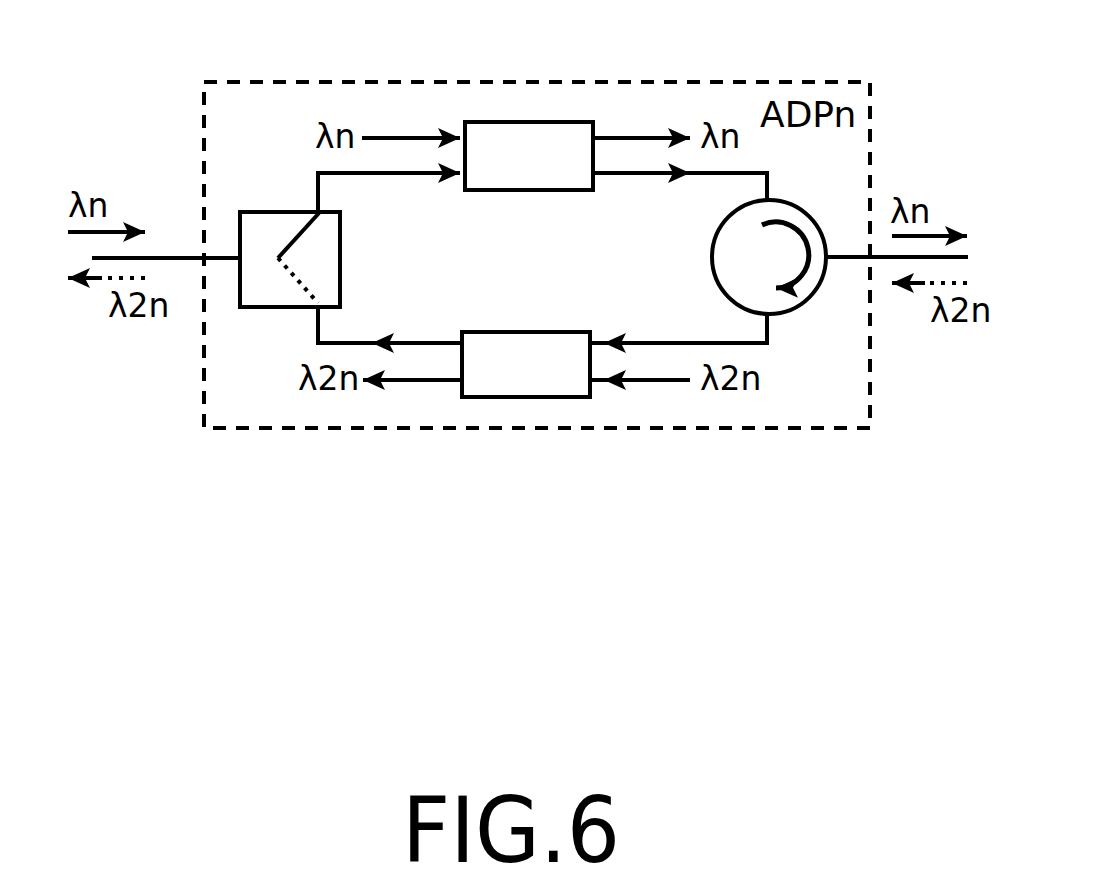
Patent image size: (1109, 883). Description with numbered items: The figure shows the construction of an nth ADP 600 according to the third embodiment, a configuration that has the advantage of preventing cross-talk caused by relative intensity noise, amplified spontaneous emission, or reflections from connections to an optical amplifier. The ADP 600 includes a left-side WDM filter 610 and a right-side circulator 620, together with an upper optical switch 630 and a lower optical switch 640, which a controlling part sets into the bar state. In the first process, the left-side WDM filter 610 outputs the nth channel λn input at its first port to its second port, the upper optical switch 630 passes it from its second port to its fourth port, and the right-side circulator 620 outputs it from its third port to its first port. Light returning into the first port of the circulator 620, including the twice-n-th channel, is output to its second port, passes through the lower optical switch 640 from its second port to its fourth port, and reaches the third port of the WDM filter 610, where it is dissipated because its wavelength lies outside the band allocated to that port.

The nth ADP 600 is at (475, 268).
The left-side WDM filter 610 is at (380, 230).
The right-side circulator 620 is at (779, 286).
The upper optical switch 630 is at (531, 125).
The lower optical switch 640 is at (531, 392).